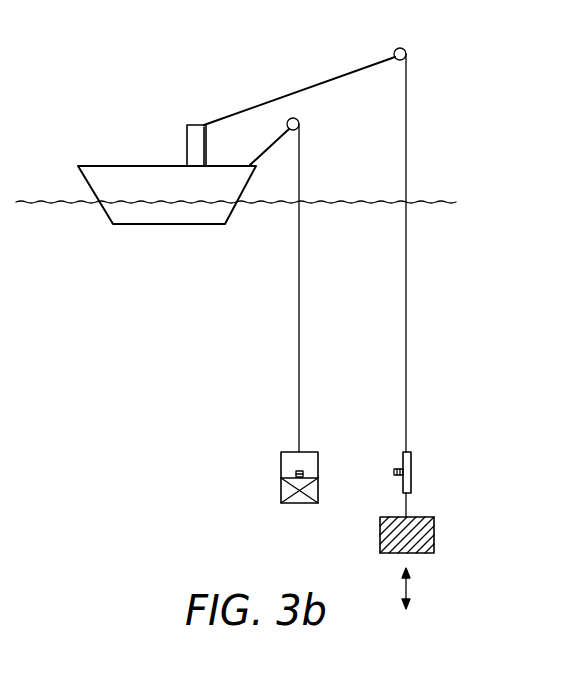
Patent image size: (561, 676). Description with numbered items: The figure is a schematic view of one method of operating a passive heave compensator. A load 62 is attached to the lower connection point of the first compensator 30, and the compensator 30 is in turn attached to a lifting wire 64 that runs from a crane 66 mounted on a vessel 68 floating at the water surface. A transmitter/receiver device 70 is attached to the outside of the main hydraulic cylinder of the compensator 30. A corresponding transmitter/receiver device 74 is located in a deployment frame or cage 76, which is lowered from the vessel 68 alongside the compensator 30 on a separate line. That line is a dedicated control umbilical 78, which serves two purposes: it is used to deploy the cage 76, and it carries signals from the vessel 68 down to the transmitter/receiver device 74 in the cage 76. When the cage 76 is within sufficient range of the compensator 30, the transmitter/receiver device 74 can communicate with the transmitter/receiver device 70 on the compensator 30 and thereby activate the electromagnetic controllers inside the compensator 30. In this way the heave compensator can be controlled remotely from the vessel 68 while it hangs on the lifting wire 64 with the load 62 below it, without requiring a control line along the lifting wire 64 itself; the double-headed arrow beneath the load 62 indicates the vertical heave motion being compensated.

The first compensator 30 is at (411, 460).
The load 62 is at (434, 528).
The lifting wire 64 is at (406, 110).
The crane 66 is at (265, 100).
The vessel 68 is at (180, 194).
The transmitter/receiver device 70 is at (394, 472).
The transmitter/receiver device 74 is at (302, 471).
The deployment frame or cage 76 is at (281, 462).
The dedicated control umbilical 78 is at (300, 325).